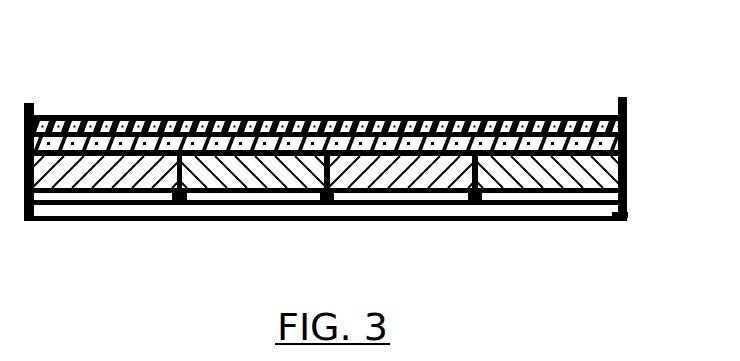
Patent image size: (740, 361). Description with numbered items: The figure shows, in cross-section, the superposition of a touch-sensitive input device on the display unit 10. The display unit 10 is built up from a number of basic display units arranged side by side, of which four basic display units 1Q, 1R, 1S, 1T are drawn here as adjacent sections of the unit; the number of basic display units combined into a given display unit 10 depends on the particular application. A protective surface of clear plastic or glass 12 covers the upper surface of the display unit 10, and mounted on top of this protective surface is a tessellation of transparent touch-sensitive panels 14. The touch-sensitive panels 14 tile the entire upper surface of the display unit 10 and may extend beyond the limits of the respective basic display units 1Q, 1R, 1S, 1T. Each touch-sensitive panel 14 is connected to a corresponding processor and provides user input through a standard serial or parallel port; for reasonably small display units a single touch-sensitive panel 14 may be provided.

The display unit 10 is at (373, 75).
The protective surface of clear plastic or glass 12 is at (627, 140).
The touch-sensitive panel 14 is at (213, 118).
The basic display unit 1Q is at (122, 175).
The basic display unit 1R is at (275, 173).
The basic display unit 1S is at (382, 173).
The basic display unit 1T is at (558, 167).